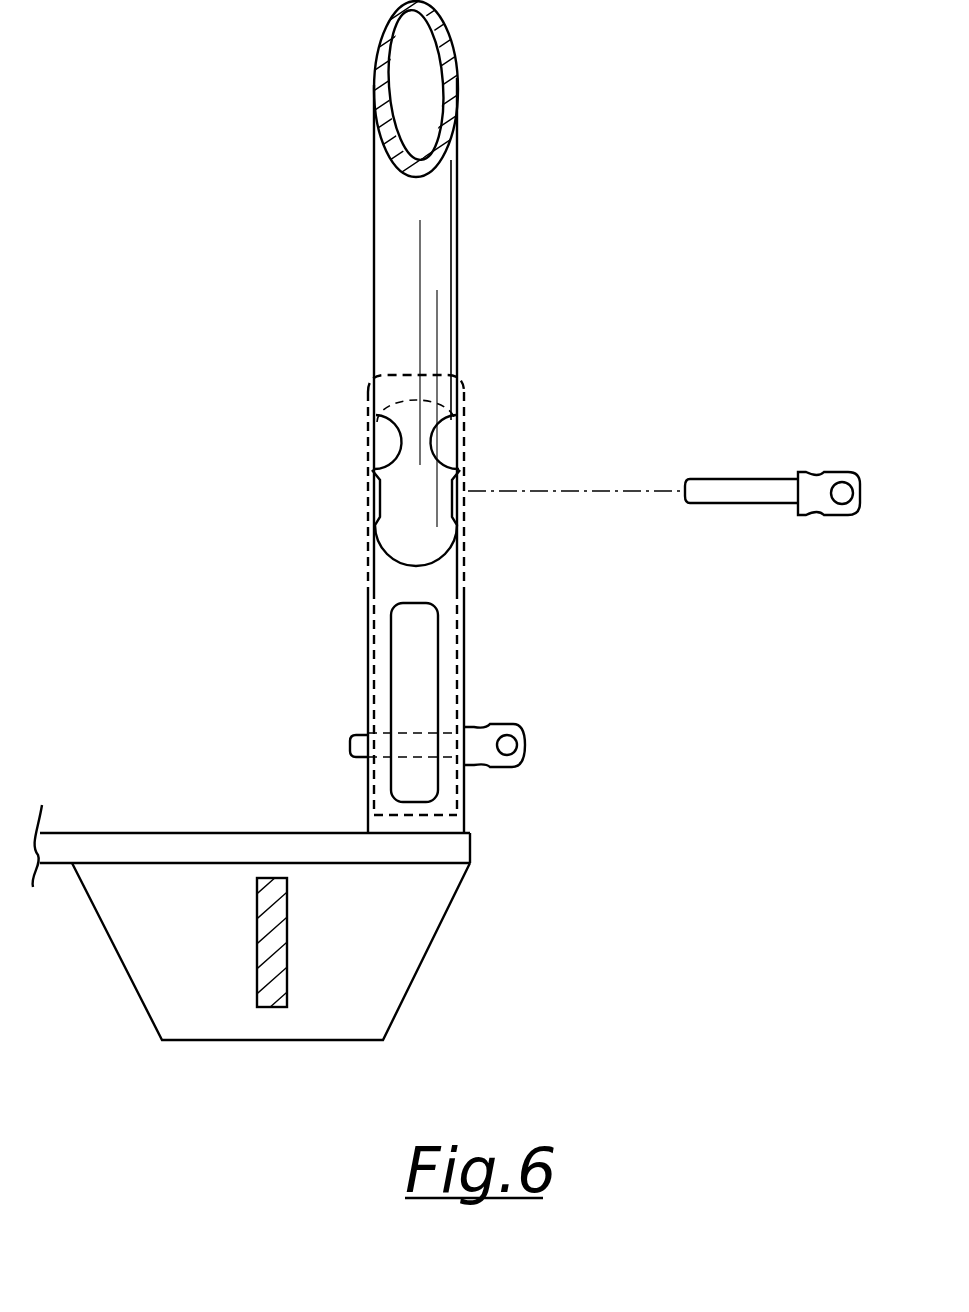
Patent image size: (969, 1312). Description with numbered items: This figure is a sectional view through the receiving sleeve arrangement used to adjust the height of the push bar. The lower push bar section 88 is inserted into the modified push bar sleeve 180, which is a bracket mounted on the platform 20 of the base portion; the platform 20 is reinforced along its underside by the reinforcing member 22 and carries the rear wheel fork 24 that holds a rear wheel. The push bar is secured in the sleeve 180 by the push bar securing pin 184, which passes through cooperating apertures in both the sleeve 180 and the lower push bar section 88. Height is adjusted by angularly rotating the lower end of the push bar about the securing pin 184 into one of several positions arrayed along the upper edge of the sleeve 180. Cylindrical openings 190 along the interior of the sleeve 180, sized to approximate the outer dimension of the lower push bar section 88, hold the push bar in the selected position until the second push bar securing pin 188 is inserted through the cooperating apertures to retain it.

The platform 20 is at (167, 832).
The reinforcing member 22 is at (422, 967).
The rear wheel fork 24 is at (258, 933).
The lower push bar section 88 is at (456, 240).
The modified push bar sleeve 180 is at (367, 642).
The push bar securing pin 184 is at (540, 727).
The second push bar securing pin 188 is at (832, 475).
The cylindrical opening 190 is at (376, 415).